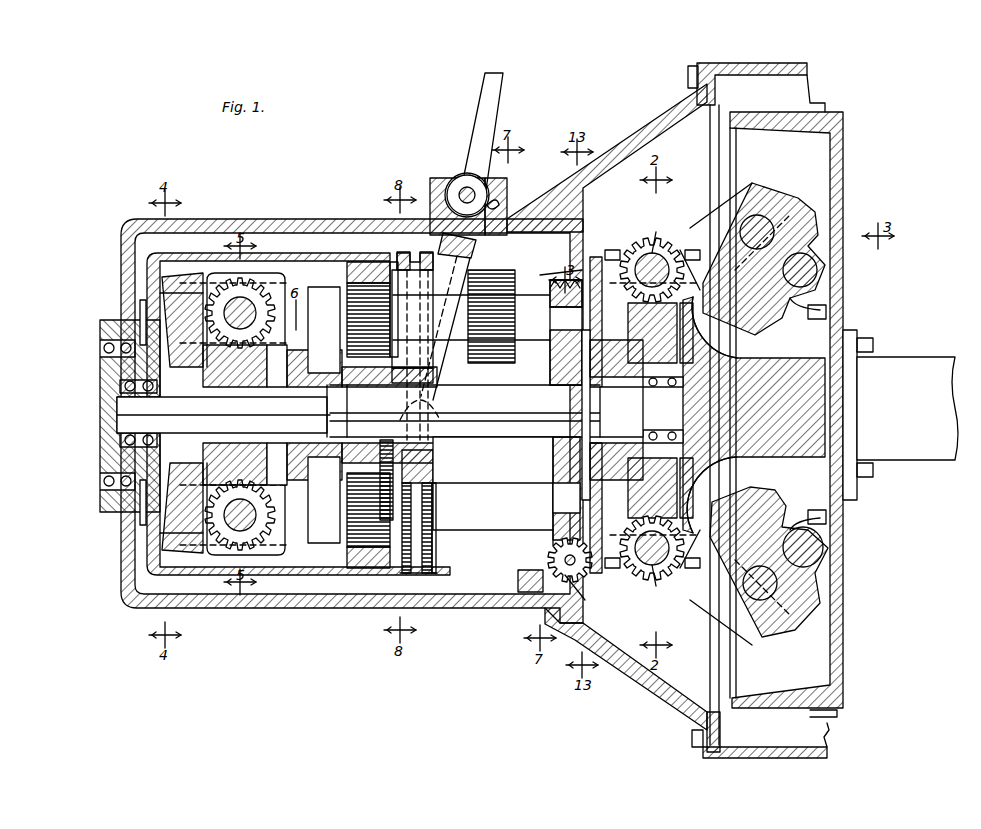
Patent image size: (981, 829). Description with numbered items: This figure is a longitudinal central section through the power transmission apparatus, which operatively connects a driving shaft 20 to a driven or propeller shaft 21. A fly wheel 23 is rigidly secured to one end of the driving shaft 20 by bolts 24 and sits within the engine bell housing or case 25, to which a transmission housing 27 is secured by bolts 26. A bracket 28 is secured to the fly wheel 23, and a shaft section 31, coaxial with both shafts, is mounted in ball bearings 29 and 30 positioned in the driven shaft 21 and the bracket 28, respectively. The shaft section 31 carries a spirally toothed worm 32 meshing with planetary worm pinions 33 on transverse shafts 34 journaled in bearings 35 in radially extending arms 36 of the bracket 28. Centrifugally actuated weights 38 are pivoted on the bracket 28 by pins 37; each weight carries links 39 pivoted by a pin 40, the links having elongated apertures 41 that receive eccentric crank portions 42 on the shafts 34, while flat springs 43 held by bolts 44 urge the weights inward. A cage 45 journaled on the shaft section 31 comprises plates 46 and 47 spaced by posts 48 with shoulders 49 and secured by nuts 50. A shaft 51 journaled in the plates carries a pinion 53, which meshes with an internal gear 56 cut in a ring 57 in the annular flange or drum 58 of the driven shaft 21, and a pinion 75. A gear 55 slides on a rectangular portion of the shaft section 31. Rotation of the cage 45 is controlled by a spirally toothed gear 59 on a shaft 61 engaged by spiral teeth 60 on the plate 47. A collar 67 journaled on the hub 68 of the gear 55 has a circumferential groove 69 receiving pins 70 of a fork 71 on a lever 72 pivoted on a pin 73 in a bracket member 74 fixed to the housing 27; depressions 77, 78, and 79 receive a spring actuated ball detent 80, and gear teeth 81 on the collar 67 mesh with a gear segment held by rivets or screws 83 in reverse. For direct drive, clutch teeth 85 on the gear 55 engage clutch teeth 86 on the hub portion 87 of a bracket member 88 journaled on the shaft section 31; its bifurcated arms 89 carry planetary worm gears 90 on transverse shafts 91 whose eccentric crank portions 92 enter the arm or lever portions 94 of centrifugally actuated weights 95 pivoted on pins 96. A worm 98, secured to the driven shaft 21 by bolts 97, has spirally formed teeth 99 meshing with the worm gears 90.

The driving shaft 20 is at (912, 378).
The driven shaft 21 is at (97, 410).
The fly wheel 23 is at (843, 150).
The bolts 24 is at (866, 340).
The bell housing 25 is at (770, 63).
The bolts 26 is at (688, 74).
The transmission housing 27 is at (650, 130).
The bracket 28 is at (760, 372).
The ball bearing 29 is at (100, 386).
The ball bearing 30 is at (700, 468).
The shaft section 31 is at (160, 415).
The worm 32 is at (628, 340).
The planetary worm pinions 33 is at (625, 252).
The pinion shafts 34 is at (640, 252).
The bearings 35 is at (565, 268).
The arms 36 is at (706, 330).
The pins 37 is at (803, 270).
The centrifugally actuated weights 38 is at (800, 205).
The links 39 is at (707, 414).
The pin 40 is at (762, 214).
The elongated apertures 41 is at (685, 412).
The eccentric crank portions 42 is at (654, 410).
The flat springs 43 is at (800, 312).
The bolts 44 is at (830, 308).
The cage 45 is at (437, 496).
The plate 46 is at (300, 443).
The plate 47 is at (550, 533).
The posts 48 is at (485, 495).
The shoulders 49 is at (558, 475).
The nuts 50 is at (553, 492).
The shaft 51 is at (552, 300).
The pinion 53 is at (350, 290).
The gear 55 is at (385, 470).
The internal gear 56 is at (355, 262).
The ring 57 is at (395, 262).
The drum 58 is at (290, 233).
The spirally toothed gear 59 is at (560, 556).
The spirally formed teeth 60 is at (558, 317).
The shaft 61 is at (587, 595).
The collar 67 is at (445, 528).
The hub 68 is at (429, 355).
The circumferential groove 69 is at (410, 573).
The pins 70 is at (466, 180).
The fork 71 is at (476, 244).
The lever 72 is at (486, 120).
The pin 73 is at (464, 192).
The bracket member 74 is at (450, 192).
The pinion 75 is at (493, 306).
The depression 77 is at (498, 180).
The depression 78 is at (498, 204).
The depression 79 is at (467, 208).
The ball detent 80 is at (505, 185).
The gear teeth 81 is at (430, 515).
The rivets or screws 83 is at (520, 576).
The clutch teeth 85 is at (345, 425).
The clutch teeth 86 is at (465, 411).
The hub portion 87 is at (345, 378).
The bracket member 88 is at (300, 360).
The bifurcated arms 89 is at (262, 253).
The planetary worm gears 90 is at (228, 300).
The shafts 91 is at (238, 300).
The eccentric crank portions 92 is at (295, 323).
The arm or lever portions 94 is at (185, 285).
The centrifugally actuated weights 95 is at (175, 300).
The pins 96 is at (282, 290).
The bolts 97 is at (140, 318).
The worm 98 is at (210, 380).
The spirally formed teeth 99 is at (272, 370).